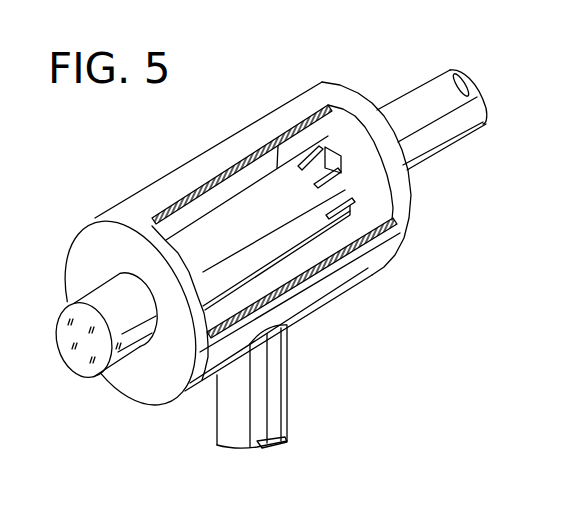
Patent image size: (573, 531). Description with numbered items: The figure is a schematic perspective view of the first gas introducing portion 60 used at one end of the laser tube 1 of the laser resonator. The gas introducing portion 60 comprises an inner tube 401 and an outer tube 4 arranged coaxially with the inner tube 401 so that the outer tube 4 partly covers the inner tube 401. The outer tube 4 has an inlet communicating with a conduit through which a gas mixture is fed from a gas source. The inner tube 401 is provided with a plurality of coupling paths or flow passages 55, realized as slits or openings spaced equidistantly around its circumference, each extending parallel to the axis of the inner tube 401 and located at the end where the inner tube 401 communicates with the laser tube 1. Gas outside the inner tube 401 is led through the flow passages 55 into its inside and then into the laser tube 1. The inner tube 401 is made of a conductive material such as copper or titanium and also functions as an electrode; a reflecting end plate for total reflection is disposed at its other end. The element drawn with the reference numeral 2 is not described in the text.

The first gas introducing portion 60 is at (268, 68).
The outer tube 4 is at (198, 186).
The inner tube 401 is at (292, 236).
The flow passages 55 is at (334, 163).
The laser tube 1 is at (421, 96).
The end cylinder 2 is at (95, 368).